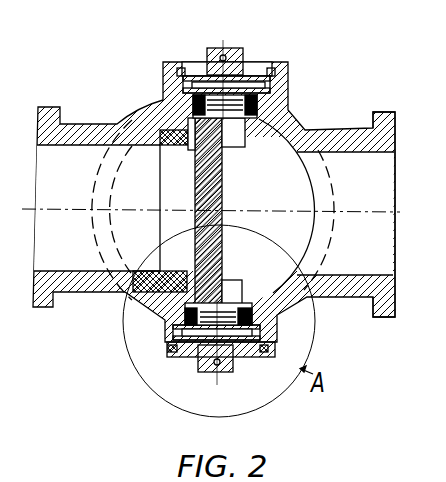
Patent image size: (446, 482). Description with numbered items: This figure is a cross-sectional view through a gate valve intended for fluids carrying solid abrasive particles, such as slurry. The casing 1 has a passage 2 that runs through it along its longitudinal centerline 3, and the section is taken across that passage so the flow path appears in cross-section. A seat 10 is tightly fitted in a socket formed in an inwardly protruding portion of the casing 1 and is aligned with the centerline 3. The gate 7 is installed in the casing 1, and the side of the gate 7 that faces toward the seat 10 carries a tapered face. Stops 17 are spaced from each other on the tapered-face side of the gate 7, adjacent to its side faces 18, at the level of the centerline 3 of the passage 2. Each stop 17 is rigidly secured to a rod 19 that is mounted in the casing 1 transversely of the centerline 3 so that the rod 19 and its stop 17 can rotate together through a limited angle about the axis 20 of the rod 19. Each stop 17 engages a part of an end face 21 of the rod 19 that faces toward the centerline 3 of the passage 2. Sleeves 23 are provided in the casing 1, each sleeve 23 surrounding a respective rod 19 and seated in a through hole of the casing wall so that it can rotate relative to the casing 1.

The casing 1 is at (295, 118).
The passage 2 is at (376, 247).
The longitudinal centerline 3 is at (393, 212).
The gate 7 is at (222, 212).
The seat 10 is at (165, 150).
The stops 17 is at (243, 143).
The side faces 18 is at (187, 115).
The rod 19 is at (283, 100).
The axis 20 is at (223, 43).
The end face 21 is at (187, 262).
The sleeves 23 is at (247, 306).